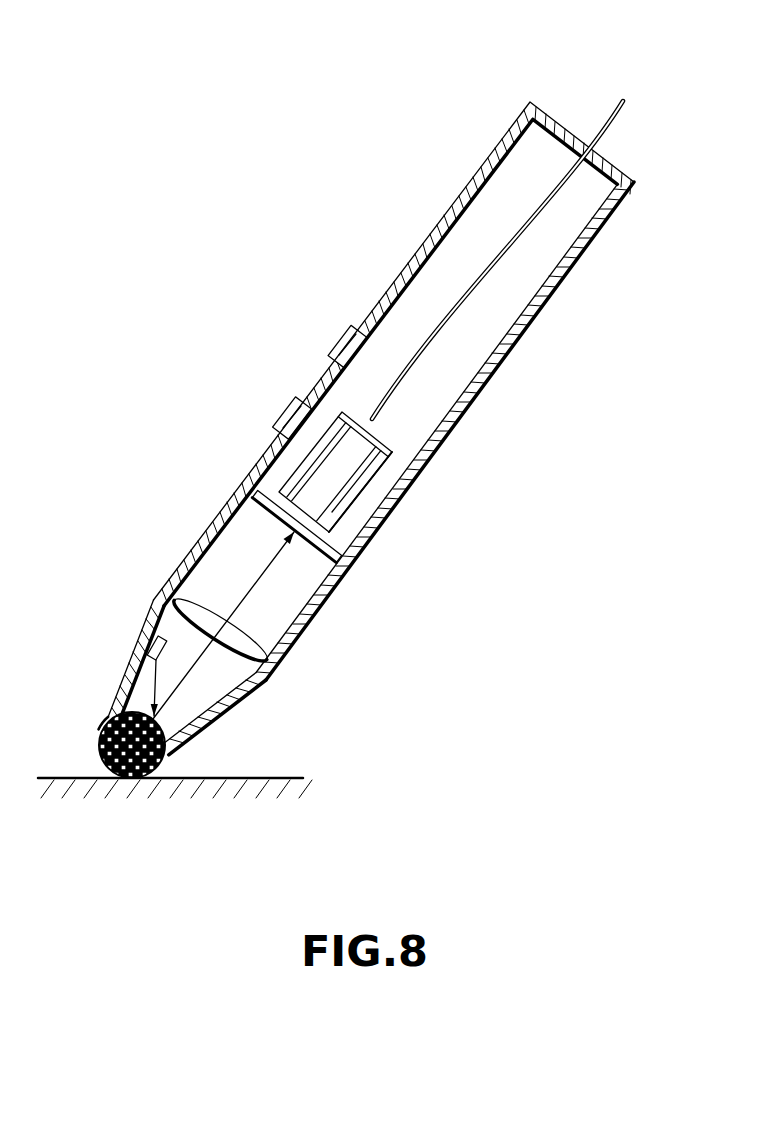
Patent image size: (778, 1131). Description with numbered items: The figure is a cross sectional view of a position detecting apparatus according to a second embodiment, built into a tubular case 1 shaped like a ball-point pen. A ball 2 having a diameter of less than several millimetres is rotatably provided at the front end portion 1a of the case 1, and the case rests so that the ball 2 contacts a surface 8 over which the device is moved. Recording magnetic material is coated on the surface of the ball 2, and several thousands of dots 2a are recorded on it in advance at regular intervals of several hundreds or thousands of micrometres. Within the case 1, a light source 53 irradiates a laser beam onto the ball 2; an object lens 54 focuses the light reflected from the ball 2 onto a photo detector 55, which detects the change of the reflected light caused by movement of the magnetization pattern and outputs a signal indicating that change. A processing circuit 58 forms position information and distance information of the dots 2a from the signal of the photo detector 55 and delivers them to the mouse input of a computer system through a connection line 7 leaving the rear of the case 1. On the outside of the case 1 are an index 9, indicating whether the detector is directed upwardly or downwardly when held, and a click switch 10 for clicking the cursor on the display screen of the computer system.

The tubular case 1 is at (367, 422).
The front end portion 1a is at (171, 756).
The ball 2 is at (93, 720).
The dots 2a is at (106, 772).
The connection line 7 is at (619, 98).
The writing surface 8 is at (284, 770).
The index 9 is at (343, 336).
The click switch 10 is at (282, 408).
The light source 53 is at (142, 635).
The object lens 54 is at (243, 631).
The photo detector 55 is at (330, 544).
The processing circuit 58 is at (372, 461).